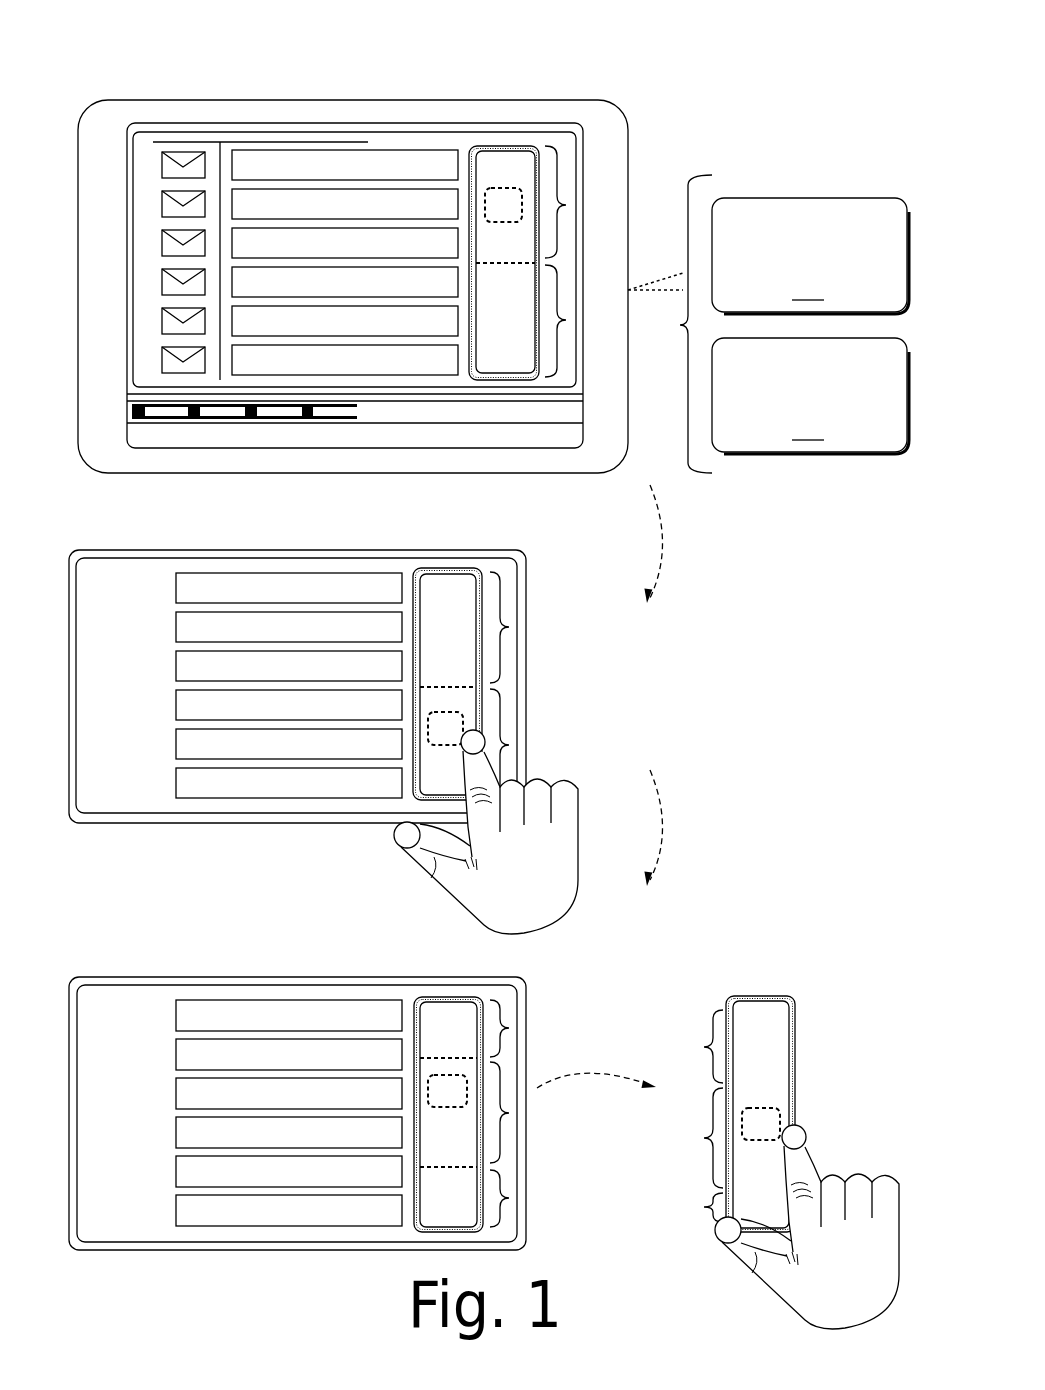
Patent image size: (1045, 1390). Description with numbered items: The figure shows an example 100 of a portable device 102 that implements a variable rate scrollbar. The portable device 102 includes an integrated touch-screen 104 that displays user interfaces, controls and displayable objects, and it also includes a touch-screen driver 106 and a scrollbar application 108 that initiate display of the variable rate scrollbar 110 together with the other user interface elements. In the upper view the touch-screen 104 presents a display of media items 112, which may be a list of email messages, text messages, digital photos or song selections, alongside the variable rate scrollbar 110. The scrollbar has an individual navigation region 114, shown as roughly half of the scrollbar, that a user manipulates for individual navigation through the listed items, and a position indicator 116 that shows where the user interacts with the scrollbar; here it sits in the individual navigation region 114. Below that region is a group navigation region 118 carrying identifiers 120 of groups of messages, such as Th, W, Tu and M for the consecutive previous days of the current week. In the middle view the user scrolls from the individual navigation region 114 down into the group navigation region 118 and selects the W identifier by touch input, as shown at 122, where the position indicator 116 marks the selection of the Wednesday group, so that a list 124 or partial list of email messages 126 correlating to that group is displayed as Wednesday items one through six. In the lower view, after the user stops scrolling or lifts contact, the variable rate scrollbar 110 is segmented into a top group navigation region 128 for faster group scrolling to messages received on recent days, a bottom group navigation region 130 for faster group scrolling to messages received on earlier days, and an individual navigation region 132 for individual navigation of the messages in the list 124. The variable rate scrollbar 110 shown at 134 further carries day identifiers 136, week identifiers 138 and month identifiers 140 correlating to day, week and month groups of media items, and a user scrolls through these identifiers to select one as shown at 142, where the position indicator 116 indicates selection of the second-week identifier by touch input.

The example 100 is at (776, 78).
The portable device 102 is at (242, 99).
The touch-screen 104 is at (370, 122).
The touch-screen driver 106 is at (810, 256).
The scrollbar application 108 is at (810, 396).
The variable rate scrollbar 110 is at (502, 146).
The media items 112 is at (240, 149).
The individual navigation region 114 is at (558, 177).
The position indicator 116 is at (508, 186).
The group navigation region 118 is at (558, 285).
The identifiers 120 is at (487, 352).
The identifier selection 122 is at (550, 735).
The list 124 is at (160, 583).
The email messages 126 is at (210, 573).
The top group navigation region 128 is at (500, 1013).
The bottom group navigation region 130 is at (500, 1182).
The individual navigation region 132 is at (500, 1090).
The variable rate scrollbar view 134 is at (767, 1056).
The day identifiers 136 is at (687, 1058).
The week identifiers 138 is at (687, 1149).
The month identifiers 140 is at (687, 1218).
The week identifier selection 142 is at (814, 1096).